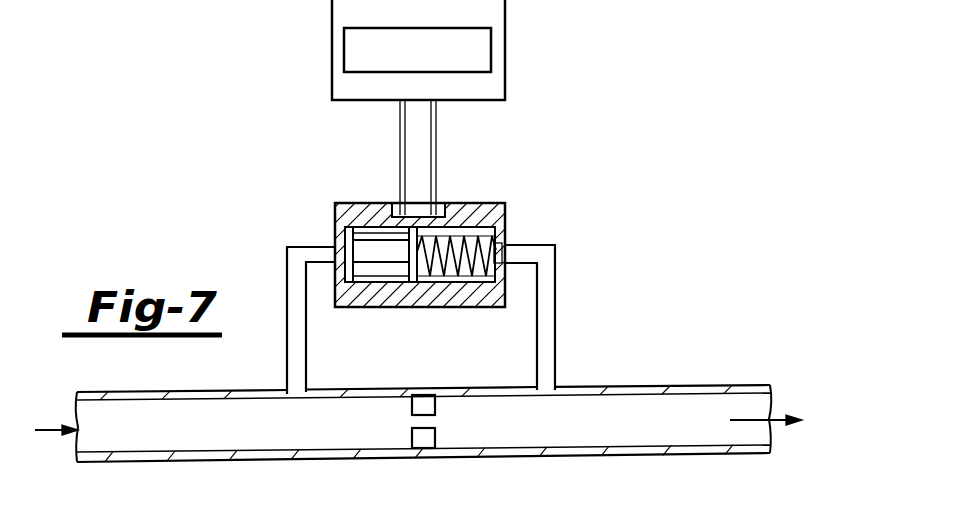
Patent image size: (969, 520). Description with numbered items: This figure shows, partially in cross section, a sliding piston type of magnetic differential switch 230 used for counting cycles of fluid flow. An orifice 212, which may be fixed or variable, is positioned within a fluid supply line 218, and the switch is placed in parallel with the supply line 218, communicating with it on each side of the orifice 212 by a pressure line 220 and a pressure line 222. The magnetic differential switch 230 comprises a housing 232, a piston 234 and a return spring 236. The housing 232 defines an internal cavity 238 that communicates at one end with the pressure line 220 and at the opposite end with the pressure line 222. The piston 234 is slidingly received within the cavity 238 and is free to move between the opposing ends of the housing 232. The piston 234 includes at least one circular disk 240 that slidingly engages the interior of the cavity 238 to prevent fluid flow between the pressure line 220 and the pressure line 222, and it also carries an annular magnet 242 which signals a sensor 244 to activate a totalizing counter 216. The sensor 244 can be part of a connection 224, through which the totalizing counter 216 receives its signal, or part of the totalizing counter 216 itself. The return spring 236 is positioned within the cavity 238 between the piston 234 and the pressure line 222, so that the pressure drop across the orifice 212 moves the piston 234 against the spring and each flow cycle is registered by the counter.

The orifice 212 is at (418, 440).
The totalizing counter 216 is at (437, 62).
The fluid supply line 218 is at (145, 437).
The pressure line 220 is at (310, 258).
The pressure line 222 is at (543, 282).
The connection 224 is at (422, 133).
The magnetic differential switch 230 is at (552, 143).
The housing 232 is at (407, 283).
The piston 234 is at (346, 231).
The return spring 236 is at (472, 226).
The internal cavity 238 is at (487, 280).
The circular disk 240 is at (411, 228).
The annular magnet 242 is at (376, 270).
The sensor 244 is at (428, 213).